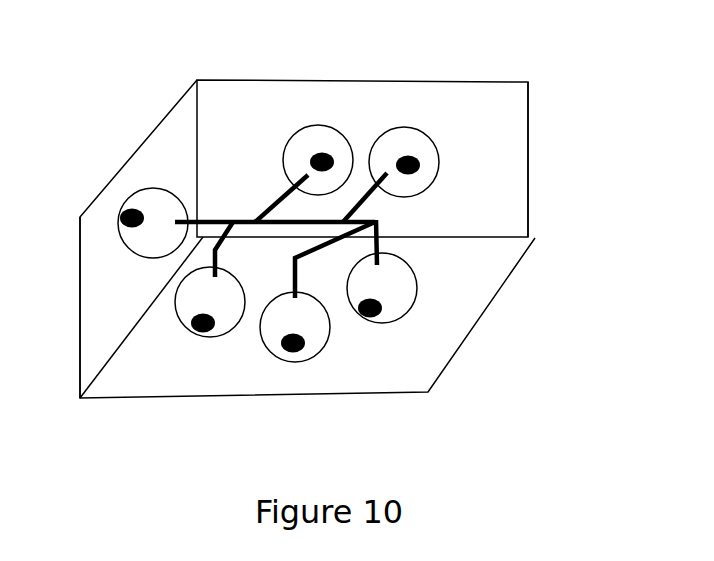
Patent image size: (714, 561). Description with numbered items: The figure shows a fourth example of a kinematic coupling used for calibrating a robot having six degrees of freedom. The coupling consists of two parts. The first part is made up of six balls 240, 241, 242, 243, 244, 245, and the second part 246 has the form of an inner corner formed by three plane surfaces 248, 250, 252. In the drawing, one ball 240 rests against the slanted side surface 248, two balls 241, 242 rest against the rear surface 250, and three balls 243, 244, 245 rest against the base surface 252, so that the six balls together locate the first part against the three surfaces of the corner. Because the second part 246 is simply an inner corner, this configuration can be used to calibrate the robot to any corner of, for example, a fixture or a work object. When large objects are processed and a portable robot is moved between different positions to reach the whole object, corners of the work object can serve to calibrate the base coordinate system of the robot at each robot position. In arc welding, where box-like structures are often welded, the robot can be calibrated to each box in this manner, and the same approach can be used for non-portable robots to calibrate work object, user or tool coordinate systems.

The ball 240 is at (145, 198).
The ball 241 is at (313, 135).
The ball 242 is at (401, 138).
The ball 243 is at (407, 292).
The ball 244 is at (320, 327).
The ball 245 is at (188, 291).
The second part of the coupling 246 is at (546, 144).
The plane surface 248 is at (168, 142).
The plane surface 250 is at (478, 98).
The plane surface 252 is at (483, 272).